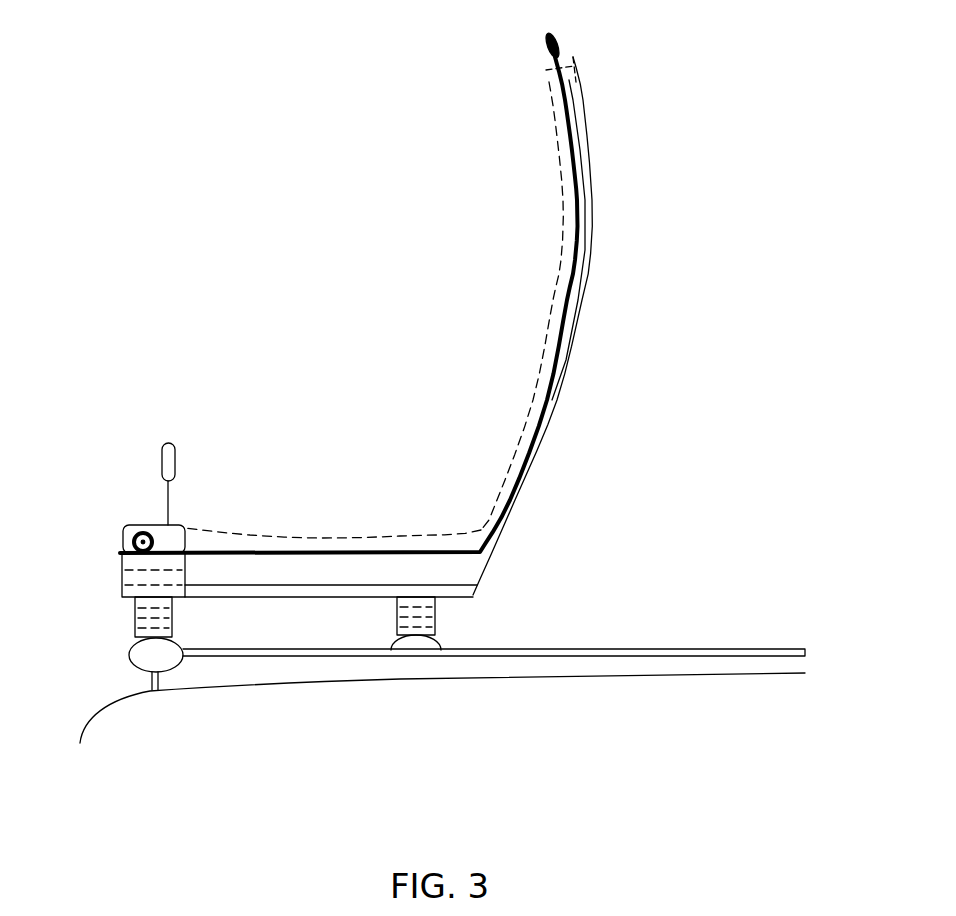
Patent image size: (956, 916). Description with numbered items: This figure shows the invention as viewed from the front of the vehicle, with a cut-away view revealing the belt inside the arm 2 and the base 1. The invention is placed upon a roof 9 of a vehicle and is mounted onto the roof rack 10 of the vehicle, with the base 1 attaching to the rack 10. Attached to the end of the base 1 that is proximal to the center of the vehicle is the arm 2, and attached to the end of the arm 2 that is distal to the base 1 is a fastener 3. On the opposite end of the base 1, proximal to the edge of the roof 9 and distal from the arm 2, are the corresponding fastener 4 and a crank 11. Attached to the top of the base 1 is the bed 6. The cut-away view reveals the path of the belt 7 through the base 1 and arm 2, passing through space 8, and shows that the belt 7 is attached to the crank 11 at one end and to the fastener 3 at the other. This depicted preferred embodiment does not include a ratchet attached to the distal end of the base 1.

The base 1 is at (302, 575).
The arm 2 is at (593, 203).
The fastener 3 is at (557, 40).
The corresponding fastener 4 is at (175, 462).
The bed 6 is at (305, 538).
The belt 7 is at (568, 100).
The space 8 is at (582, 148).
The roof 9 is at (382, 680).
The roof rack 10 is at (128, 652).
The crank 11 is at (112, 568).